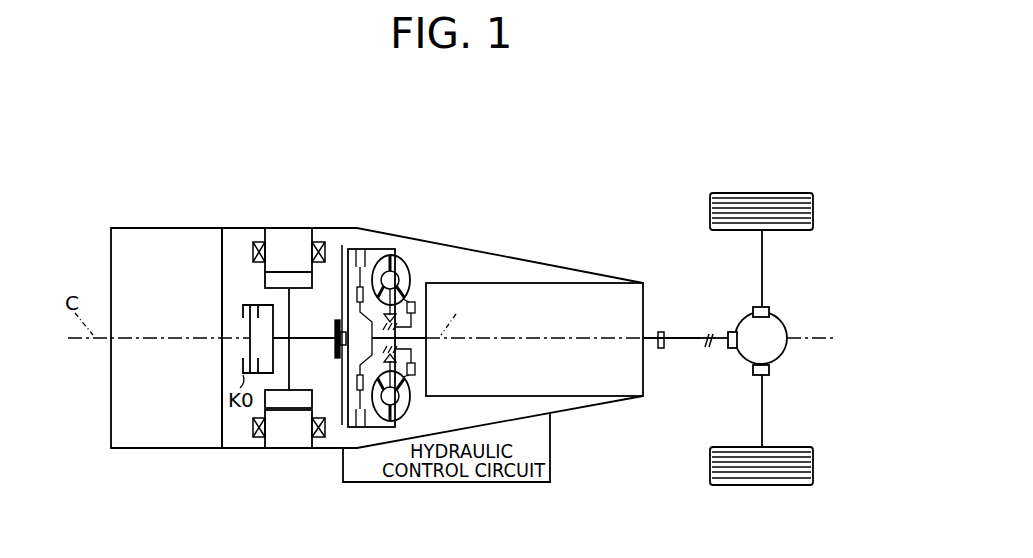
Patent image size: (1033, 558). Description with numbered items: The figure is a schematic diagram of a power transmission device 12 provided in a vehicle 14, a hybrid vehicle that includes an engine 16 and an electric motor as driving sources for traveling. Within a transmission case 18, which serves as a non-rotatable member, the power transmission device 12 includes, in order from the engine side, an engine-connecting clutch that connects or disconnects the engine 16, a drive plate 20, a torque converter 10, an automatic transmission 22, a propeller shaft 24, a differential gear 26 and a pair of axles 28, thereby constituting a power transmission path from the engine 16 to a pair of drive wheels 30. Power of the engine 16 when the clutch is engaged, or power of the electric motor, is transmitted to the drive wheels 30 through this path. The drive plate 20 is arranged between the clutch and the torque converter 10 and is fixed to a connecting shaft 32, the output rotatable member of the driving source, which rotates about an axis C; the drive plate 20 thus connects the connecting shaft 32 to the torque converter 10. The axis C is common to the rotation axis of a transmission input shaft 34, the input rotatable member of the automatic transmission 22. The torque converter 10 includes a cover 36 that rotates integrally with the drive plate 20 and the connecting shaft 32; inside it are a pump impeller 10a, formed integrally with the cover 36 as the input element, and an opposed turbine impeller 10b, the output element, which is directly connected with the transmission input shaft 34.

The torque converter 10 is at (404, 243).
The pump impeller 10a is at (401, 407).
The turbine impeller 10b is at (383, 409).
The power transmission device 12 is at (421, 172).
The vehicle 14 is at (594, 116).
The engine 16 is at (152, 237).
The transmission case 18 is at (428, 338).
The drive plate 20 is at (341, 262).
The automatic transmission 22 is at (634, 300).
The propeller shaft 24 is at (684, 345).
The differential gear 26 is at (774, 328).
The axles 28 is at (762, 271).
The drive wheels 30 is at (710, 213).
The connecting shaft 32 is at (312, 337).
The transmission input shaft 34 is at (428, 338).
The cover 36 is at (375, 249).